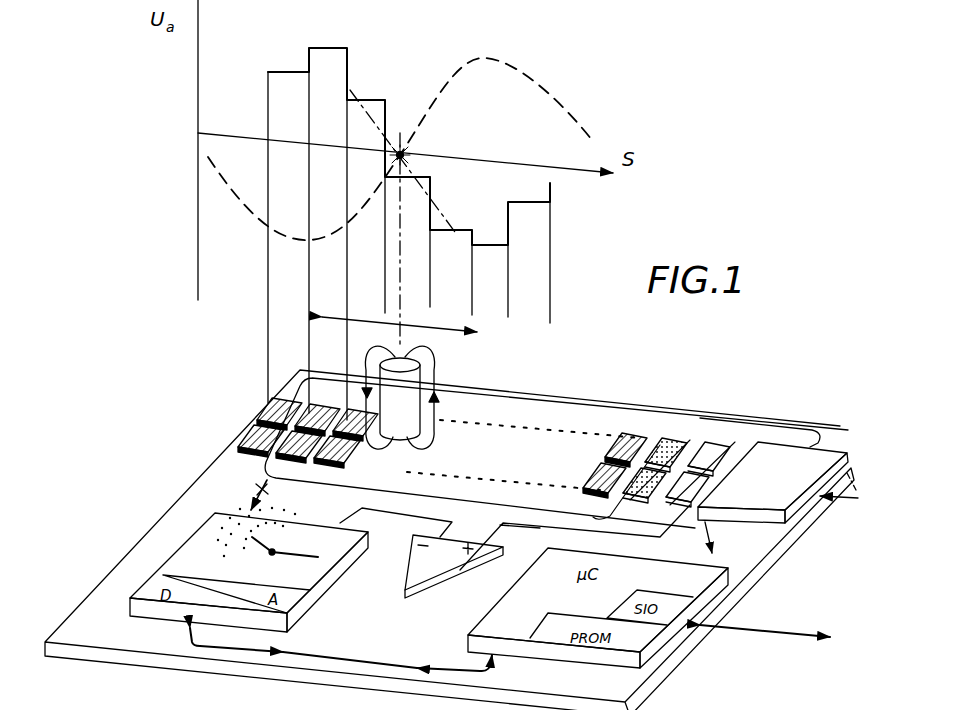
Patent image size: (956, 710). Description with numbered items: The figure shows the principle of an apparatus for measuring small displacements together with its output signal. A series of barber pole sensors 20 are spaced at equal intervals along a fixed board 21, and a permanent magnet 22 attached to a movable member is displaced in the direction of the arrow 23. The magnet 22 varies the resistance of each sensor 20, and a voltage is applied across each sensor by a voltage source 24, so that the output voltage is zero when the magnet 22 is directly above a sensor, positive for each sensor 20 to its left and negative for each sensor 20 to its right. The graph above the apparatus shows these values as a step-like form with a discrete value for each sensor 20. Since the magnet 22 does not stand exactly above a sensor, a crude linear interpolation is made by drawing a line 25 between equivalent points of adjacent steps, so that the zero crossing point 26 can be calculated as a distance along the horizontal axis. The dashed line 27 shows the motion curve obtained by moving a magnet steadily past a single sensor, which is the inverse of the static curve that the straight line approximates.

The barber pole sensors 20 is at (258, 452).
The fixed board 21 is at (478, 480).
The permanent magnet 22 is at (428, 373).
The arrow 23 is at (385, 322).
The voltage source 24 is at (775, 458).
The line 25 is at (362, 100).
The zero crossing point 26 is at (404, 154).
The dashed line 27 is at (246, 201).